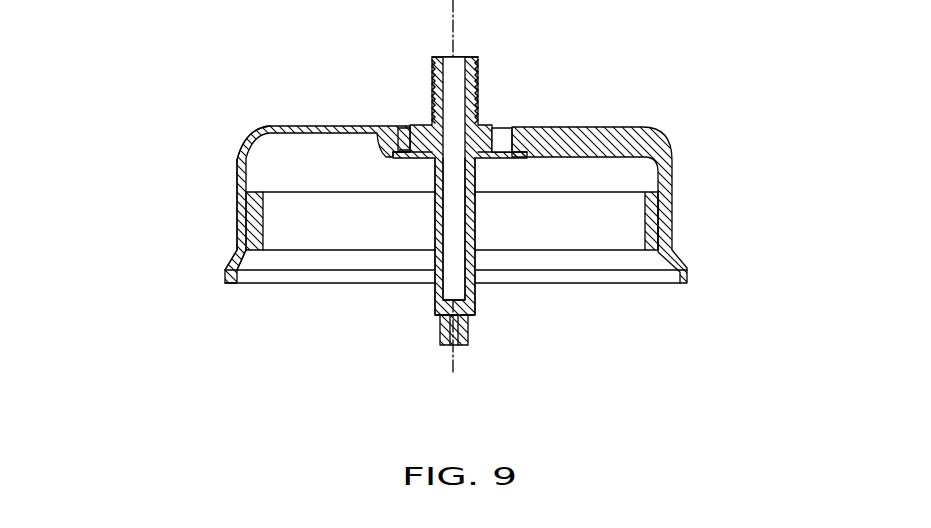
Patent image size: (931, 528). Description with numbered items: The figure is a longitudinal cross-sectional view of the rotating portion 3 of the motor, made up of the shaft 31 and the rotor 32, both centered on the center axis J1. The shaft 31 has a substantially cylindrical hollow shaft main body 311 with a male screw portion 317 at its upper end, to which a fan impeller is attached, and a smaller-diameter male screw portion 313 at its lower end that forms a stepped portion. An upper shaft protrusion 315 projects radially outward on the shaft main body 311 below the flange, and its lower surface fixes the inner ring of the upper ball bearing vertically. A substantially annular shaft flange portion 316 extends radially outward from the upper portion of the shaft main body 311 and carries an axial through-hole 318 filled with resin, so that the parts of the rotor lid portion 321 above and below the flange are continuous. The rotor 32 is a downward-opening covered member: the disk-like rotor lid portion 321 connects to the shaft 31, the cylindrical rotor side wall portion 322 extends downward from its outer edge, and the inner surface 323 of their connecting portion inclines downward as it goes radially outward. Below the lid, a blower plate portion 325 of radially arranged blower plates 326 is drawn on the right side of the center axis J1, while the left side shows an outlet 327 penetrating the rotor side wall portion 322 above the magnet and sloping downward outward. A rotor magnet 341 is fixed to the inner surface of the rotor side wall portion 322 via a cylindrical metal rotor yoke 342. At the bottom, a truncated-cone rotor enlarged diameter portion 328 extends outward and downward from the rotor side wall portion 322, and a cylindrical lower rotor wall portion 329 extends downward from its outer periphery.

The rotating portion 3 is at (140, 46).
The shaft 31 is at (498, 258).
The shaft main body 311 is at (478, 300).
The male screw portion 313 is at (470, 330).
The upper shaft protrusion 315 is at (432, 170).
The shaft flange portion 316 is at (494, 129).
The male screw portion 317 is at (480, 72).
The through-hole 318 is at (404, 125).
The rotor 32 is at (133, 222).
The rotor lid portion 321 is at (322, 126).
The rotor side wall portion 322 is at (245, 222).
The inner surface 323 is at (268, 150).
The blower plate portion 325 is at (599, 146).
The blower plate 326 is at (593, 152).
The outlet 327 is at (238, 170).
The rotor enlarged diameter portion 328 is at (237, 256).
The lower rotor wall portion 329 is at (225, 278).
The rotor magnet 341 is at (660, 193).
The rotor yoke 342 is at (656, 222).
The center axis J1 is at (450, 27).